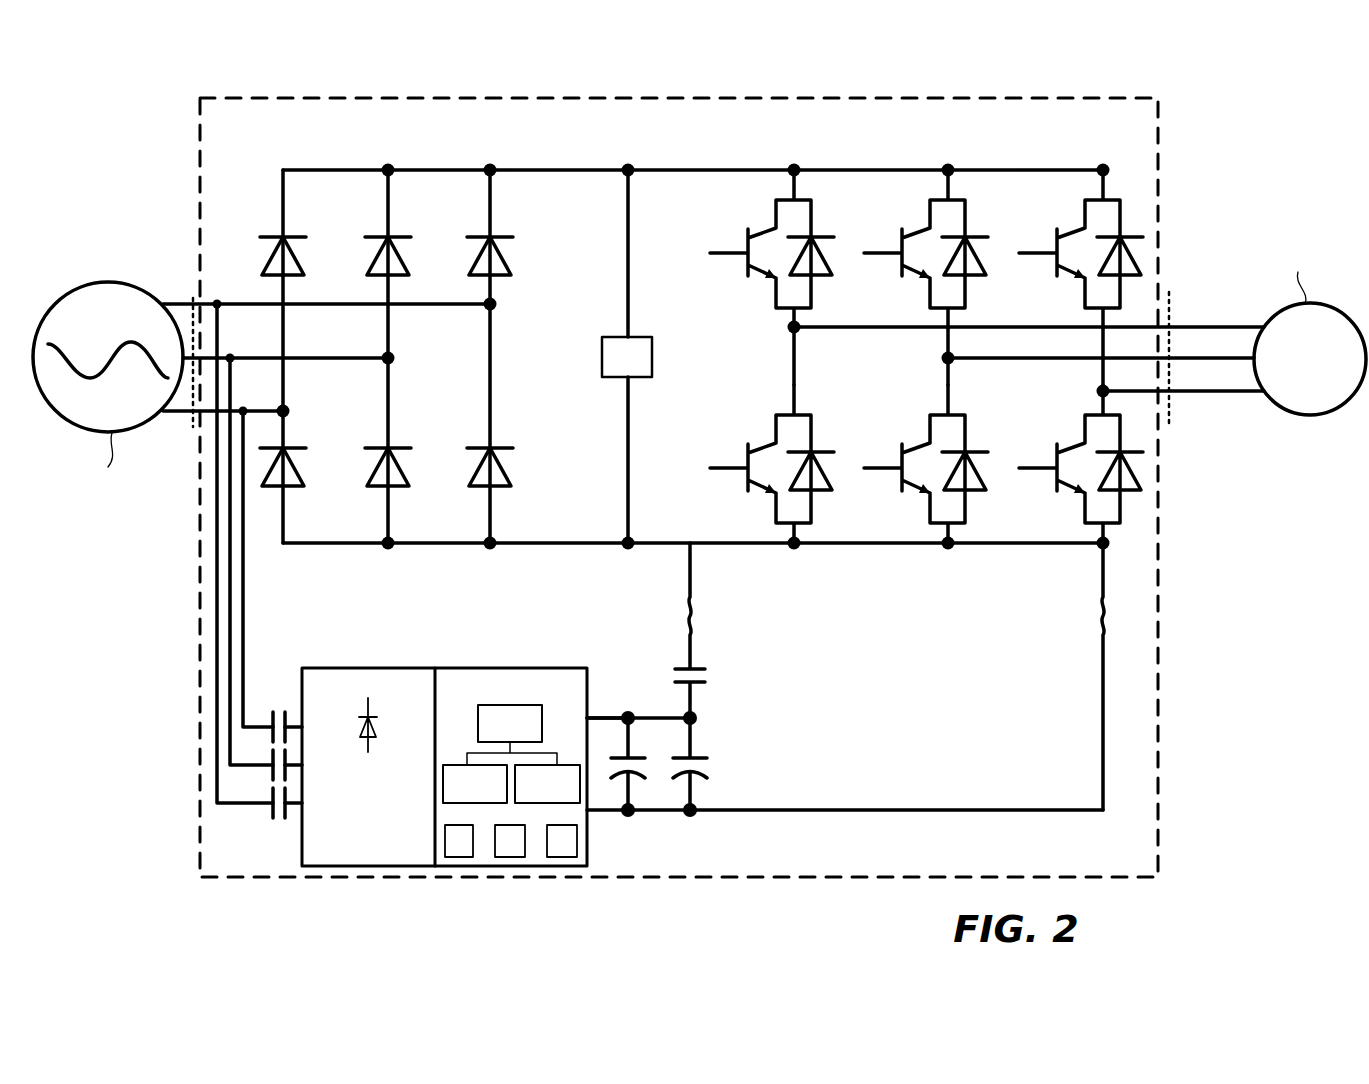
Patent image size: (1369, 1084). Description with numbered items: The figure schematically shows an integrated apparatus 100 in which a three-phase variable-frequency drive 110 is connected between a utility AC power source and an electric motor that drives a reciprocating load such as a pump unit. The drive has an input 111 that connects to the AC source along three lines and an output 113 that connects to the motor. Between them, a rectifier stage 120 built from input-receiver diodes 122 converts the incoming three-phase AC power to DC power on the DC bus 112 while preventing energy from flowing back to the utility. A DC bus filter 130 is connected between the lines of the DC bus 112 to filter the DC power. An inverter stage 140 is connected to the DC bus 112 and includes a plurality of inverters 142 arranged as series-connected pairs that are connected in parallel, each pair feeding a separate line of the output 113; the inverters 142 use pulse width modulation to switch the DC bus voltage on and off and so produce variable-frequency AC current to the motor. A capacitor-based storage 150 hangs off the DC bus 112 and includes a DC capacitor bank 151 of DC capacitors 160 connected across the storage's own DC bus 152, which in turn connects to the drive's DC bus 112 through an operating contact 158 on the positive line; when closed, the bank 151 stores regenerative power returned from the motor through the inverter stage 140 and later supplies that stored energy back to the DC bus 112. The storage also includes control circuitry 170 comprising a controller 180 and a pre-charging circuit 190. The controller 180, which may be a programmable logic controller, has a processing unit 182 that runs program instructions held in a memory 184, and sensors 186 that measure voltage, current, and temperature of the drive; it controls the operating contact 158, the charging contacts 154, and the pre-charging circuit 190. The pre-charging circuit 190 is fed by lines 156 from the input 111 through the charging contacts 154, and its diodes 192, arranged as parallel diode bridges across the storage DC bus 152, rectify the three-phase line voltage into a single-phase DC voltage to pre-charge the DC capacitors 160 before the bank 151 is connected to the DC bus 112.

The integrated apparatus 100 is at (115, 165).
The variable-frequency drive 110 is at (222, 97).
The input 111 is at (192, 295).
The DC bus 112 is at (312, 170).
The output 113 is at (1172, 300).
The rectifier stage 120 is at (377, 125).
The diode 122 is at (412, 488).
The DC bus filter 130 is at (597, 354).
The inverter stage 140 is at (920, 137).
The inverter 142 is at (898, 500).
The capacitor-based storage 150 is at (797, 765).
The DC capacitor bank 151 is at (706, 790).
The DC bus of the bank 152 is at (600, 716).
The charging contacts 154 is at (281, 835).
The lines 156 is at (208, 661).
The operating contact 158 is at (723, 676).
The DC capacitor 160 is at (628, 836).
The control circuitry 170 is at (417, 888).
The controller 180 is at (478, 868).
The processing unit 182 is at (510, 723).
The memory 184 is at (475, 784).
The sensors 186 is at (547, 784).
The pre-charging circuit 190 is at (360, 868).
The diodes 192 is at (378, 716).